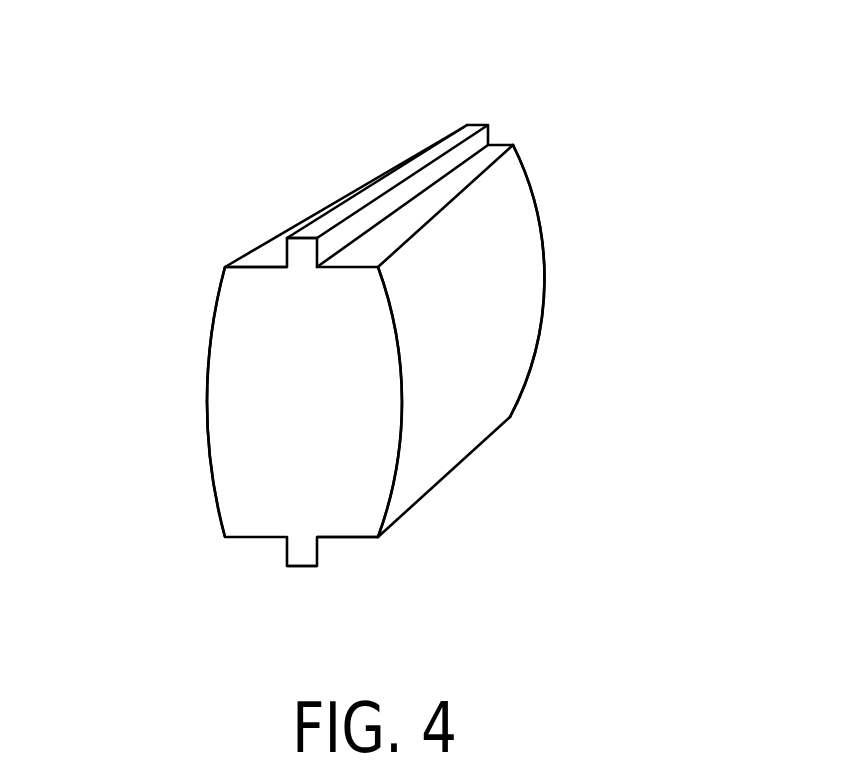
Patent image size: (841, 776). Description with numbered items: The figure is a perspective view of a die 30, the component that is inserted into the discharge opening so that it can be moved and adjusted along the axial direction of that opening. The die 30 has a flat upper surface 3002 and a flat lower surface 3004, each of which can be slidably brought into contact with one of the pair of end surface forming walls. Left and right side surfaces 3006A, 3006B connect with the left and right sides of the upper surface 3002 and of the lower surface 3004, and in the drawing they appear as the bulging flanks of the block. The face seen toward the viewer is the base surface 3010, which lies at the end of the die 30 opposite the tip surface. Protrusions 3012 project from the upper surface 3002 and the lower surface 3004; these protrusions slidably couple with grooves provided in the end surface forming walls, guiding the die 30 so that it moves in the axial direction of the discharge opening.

The die 30 is at (563, 166).
The upper surface 3002 is at (267, 253).
The lower surface 3004 is at (355, 538).
The left side surface 3006A is at (207, 353).
The right side surface 3006B is at (492, 288).
The base surface 3010 is at (262, 425).
The protrusion 3012 is at (368, 189).